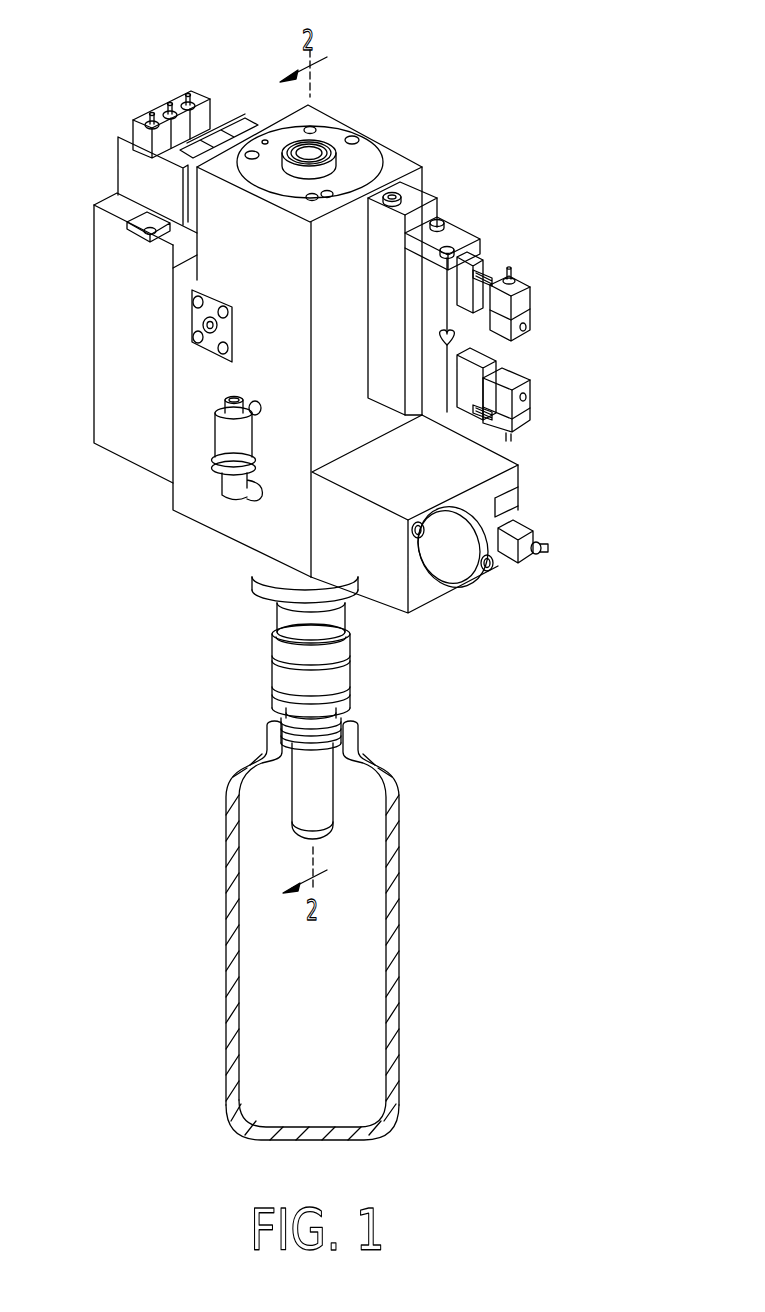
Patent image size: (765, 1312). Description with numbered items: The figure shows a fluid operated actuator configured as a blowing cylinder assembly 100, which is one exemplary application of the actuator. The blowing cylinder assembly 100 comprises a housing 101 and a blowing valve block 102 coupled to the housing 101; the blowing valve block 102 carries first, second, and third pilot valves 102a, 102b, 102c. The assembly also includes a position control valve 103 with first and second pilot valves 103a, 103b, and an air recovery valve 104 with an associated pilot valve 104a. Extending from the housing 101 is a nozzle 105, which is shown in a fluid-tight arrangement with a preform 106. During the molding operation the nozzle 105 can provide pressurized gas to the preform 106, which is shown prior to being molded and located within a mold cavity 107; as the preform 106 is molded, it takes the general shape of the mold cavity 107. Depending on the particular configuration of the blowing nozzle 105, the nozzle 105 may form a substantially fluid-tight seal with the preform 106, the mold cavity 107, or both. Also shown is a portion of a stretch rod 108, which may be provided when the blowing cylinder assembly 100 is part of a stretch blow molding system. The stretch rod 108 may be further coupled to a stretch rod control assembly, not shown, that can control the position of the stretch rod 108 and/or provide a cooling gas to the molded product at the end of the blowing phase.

The blowing cylinder assembly 100 is at (563, 90).
The housing 101 is at (195, 332).
The blowing valve block 102 is at (115, 358).
The first pilot valve 102a is at (118, 135).
The second pilot valve 102b is at (170, 111).
The third pilot valve 102c is at (188, 100).
The position control valve 103 is at (457, 226).
The first pilot valve 103a is at (492, 264).
The second pilot valve 103b is at (492, 366).
The air recovery valve 104 is at (425, 614).
The pilot valve 104a is at (548, 549).
The nozzle 105 is at (273, 677).
The preform 106 is at (335, 790).
The mold cavity 107 is at (394, 978).
The stretch rod 108 is at (316, 152).